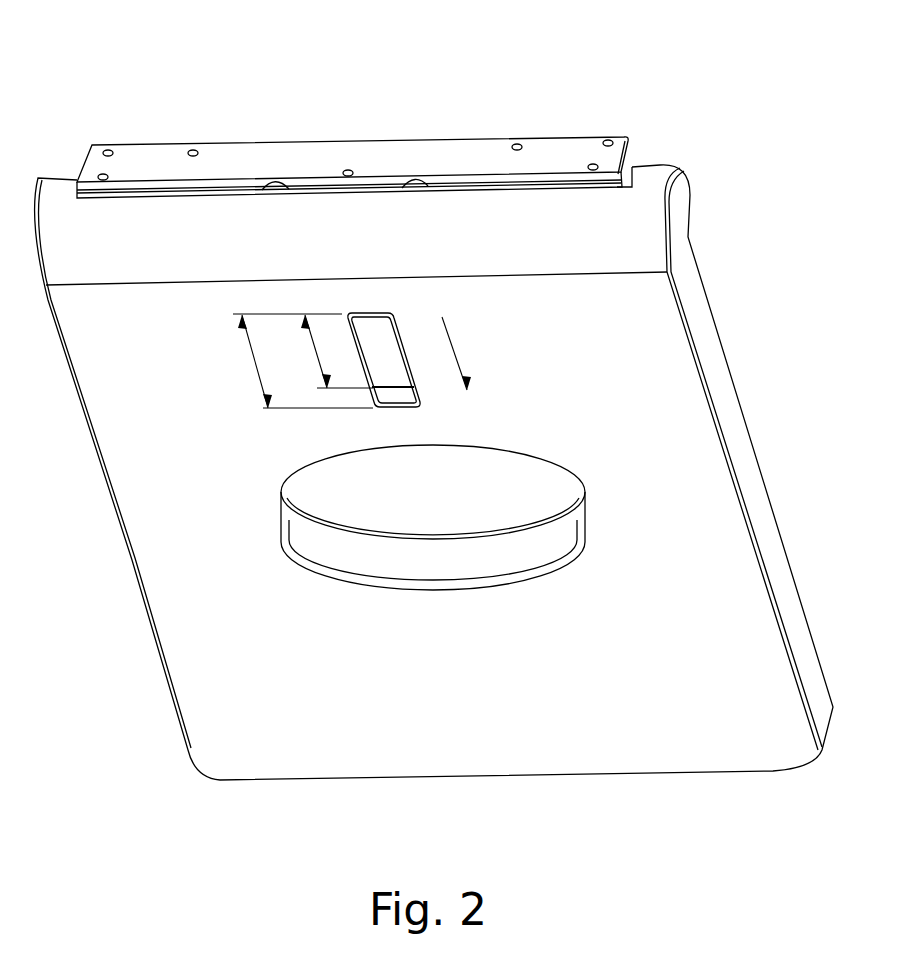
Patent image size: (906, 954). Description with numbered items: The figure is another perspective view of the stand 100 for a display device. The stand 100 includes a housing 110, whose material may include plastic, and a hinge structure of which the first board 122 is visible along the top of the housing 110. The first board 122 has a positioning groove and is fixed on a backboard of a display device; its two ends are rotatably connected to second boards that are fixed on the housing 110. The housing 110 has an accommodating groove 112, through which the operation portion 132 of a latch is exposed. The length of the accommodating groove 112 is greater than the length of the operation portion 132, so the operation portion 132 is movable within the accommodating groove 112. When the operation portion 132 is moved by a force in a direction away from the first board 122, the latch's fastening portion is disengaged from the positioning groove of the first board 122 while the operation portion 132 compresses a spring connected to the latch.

The stand for a display device 100 is at (75, 49).
The housing 110 is at (667, 358).
The accommodating groove 112 is at (407, 408).
The first board 122 is at (250, 162).
The operation portion 132 is at (375, 330).